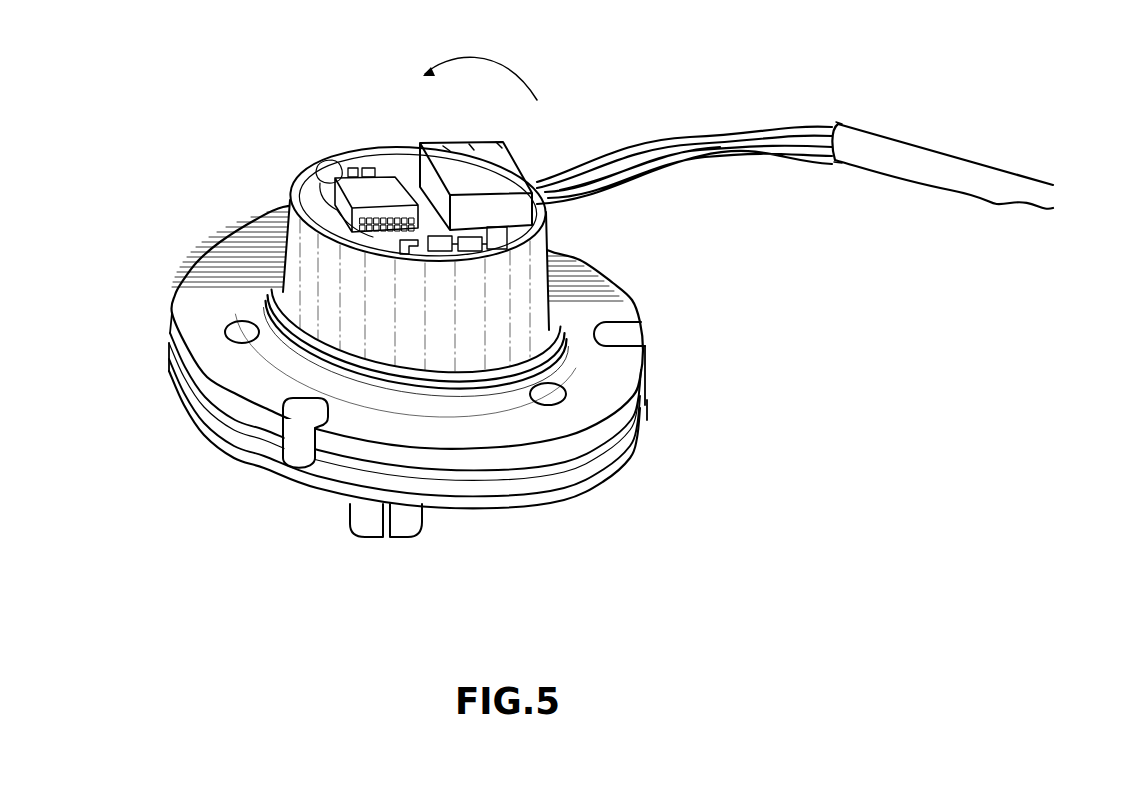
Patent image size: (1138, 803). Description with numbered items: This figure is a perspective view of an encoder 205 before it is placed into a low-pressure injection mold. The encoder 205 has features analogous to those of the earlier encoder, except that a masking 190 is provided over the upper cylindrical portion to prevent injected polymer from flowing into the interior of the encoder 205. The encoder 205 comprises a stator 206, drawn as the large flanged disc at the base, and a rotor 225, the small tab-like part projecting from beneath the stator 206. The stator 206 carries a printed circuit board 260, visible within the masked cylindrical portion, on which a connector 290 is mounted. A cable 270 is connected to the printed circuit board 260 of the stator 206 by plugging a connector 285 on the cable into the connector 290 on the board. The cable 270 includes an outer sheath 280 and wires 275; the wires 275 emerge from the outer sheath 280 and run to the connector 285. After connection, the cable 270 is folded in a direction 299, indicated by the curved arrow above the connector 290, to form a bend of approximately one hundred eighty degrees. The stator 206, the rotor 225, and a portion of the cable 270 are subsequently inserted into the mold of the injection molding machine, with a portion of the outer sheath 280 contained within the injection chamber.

The encoder 205 is at (214, 152).
The stator 206 is at (155, 442).
The rotor 225 is at (354, 552).
The masking 190 is at (520, 318).
The printed circuit board 260 is at (388, 160).
The connector 290 is at (435, 145).
The connector 285 is at (495, 146).
The wires 275 is at (697, 143).
The outer sheath 280 is at (900, 180).
The cable 270 is at (843, 96).
The direction 299 is at (517, 56).